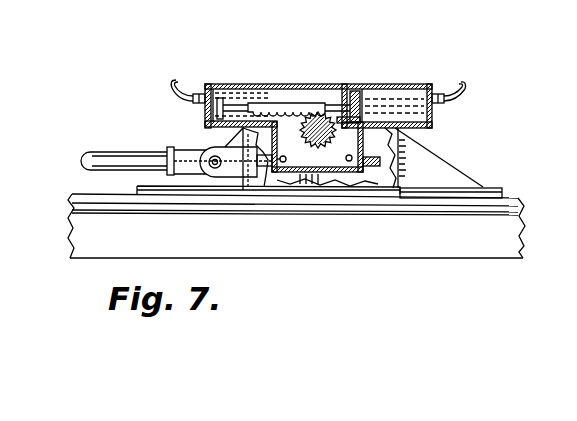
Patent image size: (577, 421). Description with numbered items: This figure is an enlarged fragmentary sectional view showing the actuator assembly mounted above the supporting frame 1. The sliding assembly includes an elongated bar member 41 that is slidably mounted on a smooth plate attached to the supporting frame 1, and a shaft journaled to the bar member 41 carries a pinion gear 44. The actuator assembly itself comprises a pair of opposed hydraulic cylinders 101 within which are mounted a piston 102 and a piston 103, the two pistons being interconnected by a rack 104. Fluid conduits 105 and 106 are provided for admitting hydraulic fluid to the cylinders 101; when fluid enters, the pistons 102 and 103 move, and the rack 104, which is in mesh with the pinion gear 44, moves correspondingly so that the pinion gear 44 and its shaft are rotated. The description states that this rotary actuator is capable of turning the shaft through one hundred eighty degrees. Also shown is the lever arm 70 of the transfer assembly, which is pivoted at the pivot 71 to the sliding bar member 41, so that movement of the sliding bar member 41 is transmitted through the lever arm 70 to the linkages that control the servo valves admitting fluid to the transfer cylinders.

The supporting frame 1 is at (70, 247).
The elongated bar member 41 is at (452, 167).
The pinion gear 44 is at (320, 148).
The lever arm 70 is at (120, 153).
The pivot 71 is at (210, 152).
The hydraulic cylinders 101 is at (312, 104).
The piston 102 is at (241, 103).
The piston 103 is at (352, 92).
The rack 104 is at (333, 104).
The fluid conduit 105 is at (462, 98).
The fluid conduit 106 is at (196, 93).